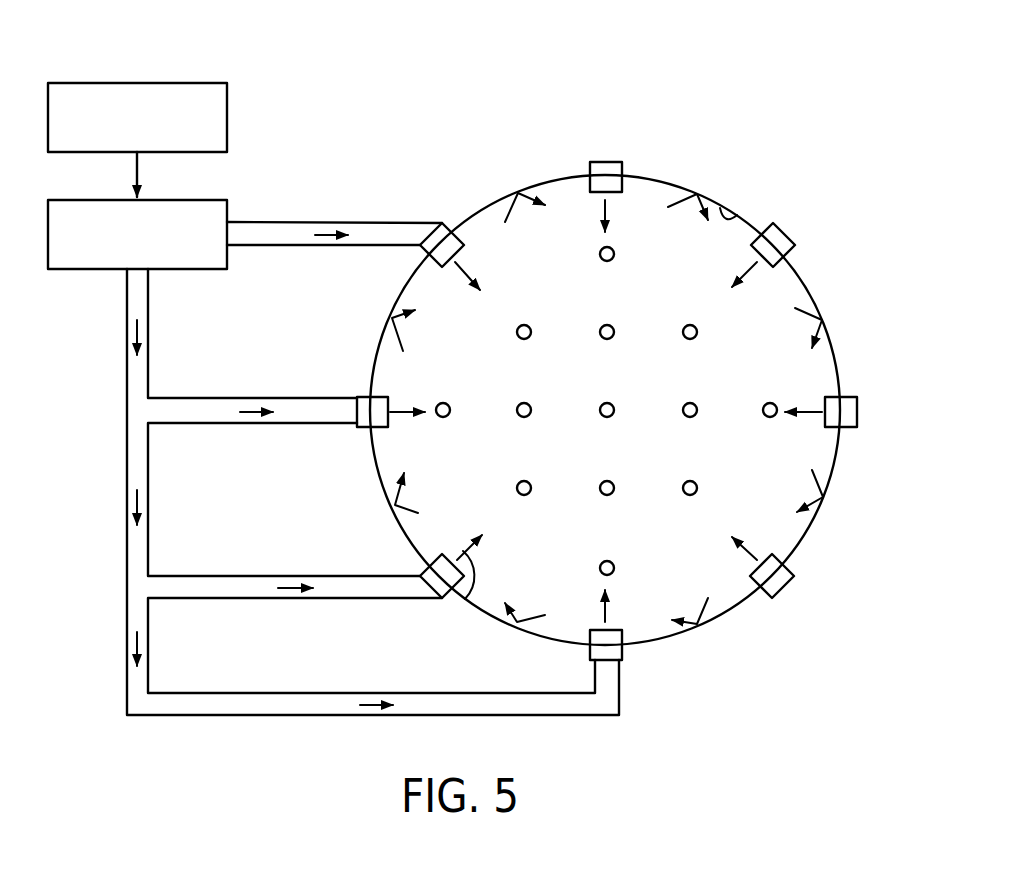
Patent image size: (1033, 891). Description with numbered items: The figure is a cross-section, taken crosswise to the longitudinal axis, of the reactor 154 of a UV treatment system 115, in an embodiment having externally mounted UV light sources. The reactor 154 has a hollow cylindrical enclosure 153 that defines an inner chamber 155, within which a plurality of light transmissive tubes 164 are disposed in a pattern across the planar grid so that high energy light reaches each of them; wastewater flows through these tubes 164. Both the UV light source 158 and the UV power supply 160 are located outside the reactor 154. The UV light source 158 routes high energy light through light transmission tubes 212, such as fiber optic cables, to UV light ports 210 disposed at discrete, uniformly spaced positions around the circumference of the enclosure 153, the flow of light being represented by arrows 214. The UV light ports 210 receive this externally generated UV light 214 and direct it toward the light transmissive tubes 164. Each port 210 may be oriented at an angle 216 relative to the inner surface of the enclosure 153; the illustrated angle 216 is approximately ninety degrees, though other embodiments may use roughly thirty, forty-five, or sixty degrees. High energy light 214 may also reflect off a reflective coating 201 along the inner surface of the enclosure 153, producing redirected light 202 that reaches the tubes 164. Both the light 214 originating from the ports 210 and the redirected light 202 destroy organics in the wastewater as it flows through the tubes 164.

The UV treatment system 115 is at (672, 65).
The enclosure 153 is at (590, 160).
The reactor 154 is at (655, 178).
The inner chamber 155 is at (563, 212).
The UV light source 158 is at (183, 200).
The UV power supply 160 is at (137, 83).
The light transmissive tubes 164 is at (600, 486).
The reflective coating 201 is at (735, 217).
The redirected high energy light 202 is at (700, 207).
The UV light ports 210 is at (446, 224).
The light transmission tubes 212 is at (337, 221).
The high energy light 214 is at (250, 408).
The angle 216 is at (478, 575).